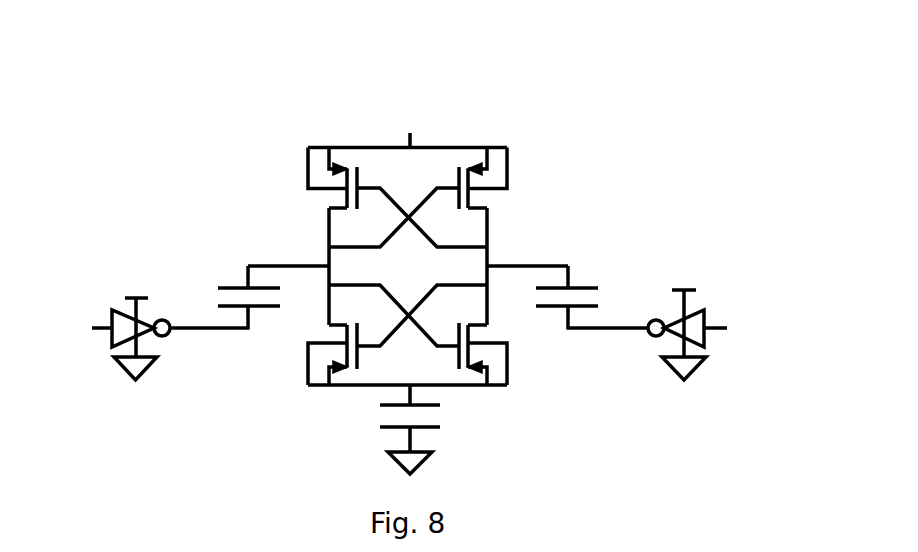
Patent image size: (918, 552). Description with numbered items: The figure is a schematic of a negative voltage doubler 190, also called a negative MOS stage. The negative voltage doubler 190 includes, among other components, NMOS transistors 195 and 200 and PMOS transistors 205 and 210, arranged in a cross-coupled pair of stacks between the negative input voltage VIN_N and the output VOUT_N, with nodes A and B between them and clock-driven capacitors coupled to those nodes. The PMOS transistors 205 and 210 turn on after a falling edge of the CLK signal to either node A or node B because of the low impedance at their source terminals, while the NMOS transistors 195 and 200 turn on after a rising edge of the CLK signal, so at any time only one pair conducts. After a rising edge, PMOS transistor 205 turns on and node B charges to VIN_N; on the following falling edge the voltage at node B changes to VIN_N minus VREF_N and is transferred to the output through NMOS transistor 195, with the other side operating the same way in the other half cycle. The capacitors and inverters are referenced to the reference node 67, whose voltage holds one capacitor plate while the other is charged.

The negative voltage doubler 190 is at (357, 76).
The NMOS transistor 200 is at (297, 166).
The PMOS transistor 205 is at (520, 174).
The PMOS transistor 210 is at (295, 369).
The NMOS transistor 195 is at (521, 370).
The reference node 67 is at (122, 371).